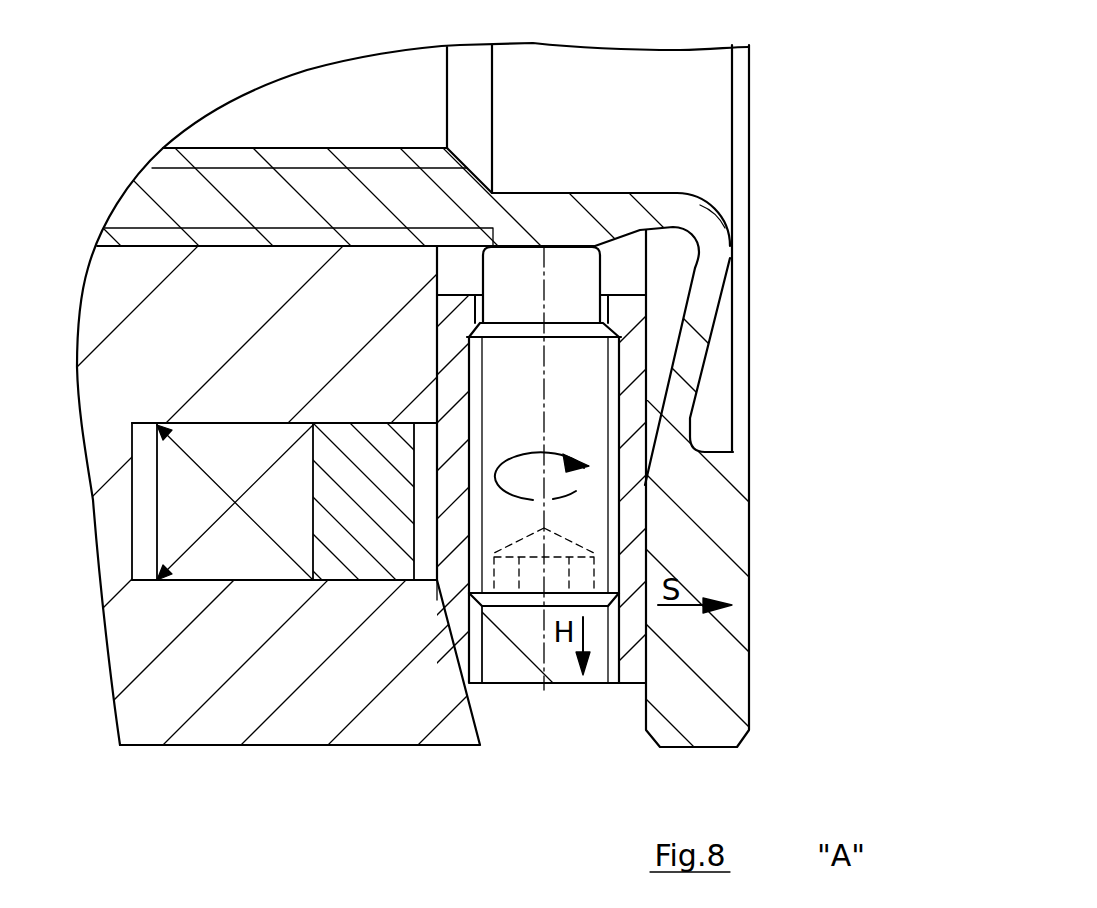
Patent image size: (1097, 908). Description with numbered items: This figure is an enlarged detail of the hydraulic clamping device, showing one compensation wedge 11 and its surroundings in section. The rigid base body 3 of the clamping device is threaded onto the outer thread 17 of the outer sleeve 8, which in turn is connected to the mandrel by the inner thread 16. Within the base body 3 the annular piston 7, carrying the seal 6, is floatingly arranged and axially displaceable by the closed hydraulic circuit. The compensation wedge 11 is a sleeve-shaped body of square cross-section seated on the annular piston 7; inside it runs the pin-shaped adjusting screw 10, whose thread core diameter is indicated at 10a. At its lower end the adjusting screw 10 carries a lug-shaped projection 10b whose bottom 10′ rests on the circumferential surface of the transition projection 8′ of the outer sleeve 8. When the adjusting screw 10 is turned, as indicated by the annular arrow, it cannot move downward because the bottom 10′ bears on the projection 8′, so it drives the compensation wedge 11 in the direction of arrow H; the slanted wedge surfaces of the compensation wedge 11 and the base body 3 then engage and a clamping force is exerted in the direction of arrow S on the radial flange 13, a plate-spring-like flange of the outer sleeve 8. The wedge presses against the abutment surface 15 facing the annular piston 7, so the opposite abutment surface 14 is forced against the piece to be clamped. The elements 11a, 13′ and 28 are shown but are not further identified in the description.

The base body 3 is at (183, 653).
The seal 6 is at (235, 540).
The annular piston 7 is at (370, 527).
The outer sleeve 8 is at (202, 198).
The transition projection 8′ is at (607, 215).
The adjusting screw 10 is at (572, 515).
The bottom 10′ is at (522, 243).
The core diameter 10a is at (480, 602).
The lug-shaped projection 10b is at (573, 283).
The compensation wedge 11 is at (633, 509).
The sleeve lower portion 11a is at (615, 635).
The radial flange 13 is at (687, 478).
The side body face 13′ is at (646, 493).
The abutment surface 14 is at (749, 628).
The abutment surface 15 is at (646, 623).
The inner thread 16 is at (230, 160).
The outer thread 17 is at (148, 238).
The spring clip 28 is at (640, 376).